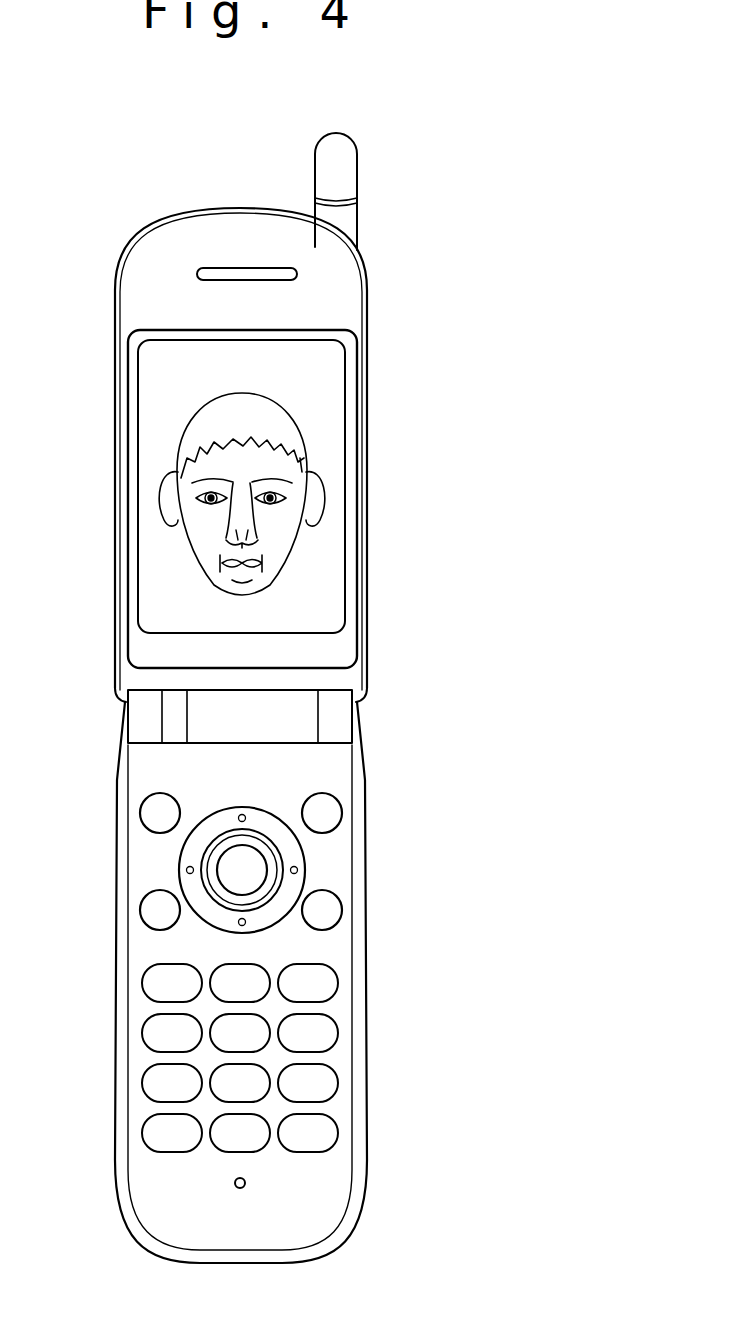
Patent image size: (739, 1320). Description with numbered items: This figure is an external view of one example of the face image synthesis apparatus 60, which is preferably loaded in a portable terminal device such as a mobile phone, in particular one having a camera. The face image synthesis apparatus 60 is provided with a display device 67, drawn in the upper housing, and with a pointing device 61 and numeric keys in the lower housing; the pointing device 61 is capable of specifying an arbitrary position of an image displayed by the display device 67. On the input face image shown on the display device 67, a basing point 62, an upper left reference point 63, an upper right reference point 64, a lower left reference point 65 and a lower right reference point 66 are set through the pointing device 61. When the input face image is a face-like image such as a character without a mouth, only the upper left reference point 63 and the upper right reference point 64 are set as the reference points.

The face image synthesis apparatus 60 is at (478, 292).
The pointing device 61 is at (322, 862).
The basing point 62 is at (242, 541).
The upper left reference point 63 is at (205, 493).
The upper right reference point 64 is at (280, 492).
The lower left reference point 65 is at (220, 563).
The lower right reference point 66 is at (262, 563).
The display device 67 is at (193, 392).